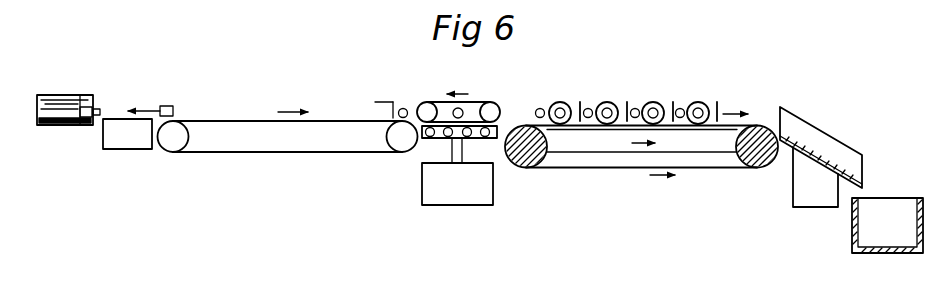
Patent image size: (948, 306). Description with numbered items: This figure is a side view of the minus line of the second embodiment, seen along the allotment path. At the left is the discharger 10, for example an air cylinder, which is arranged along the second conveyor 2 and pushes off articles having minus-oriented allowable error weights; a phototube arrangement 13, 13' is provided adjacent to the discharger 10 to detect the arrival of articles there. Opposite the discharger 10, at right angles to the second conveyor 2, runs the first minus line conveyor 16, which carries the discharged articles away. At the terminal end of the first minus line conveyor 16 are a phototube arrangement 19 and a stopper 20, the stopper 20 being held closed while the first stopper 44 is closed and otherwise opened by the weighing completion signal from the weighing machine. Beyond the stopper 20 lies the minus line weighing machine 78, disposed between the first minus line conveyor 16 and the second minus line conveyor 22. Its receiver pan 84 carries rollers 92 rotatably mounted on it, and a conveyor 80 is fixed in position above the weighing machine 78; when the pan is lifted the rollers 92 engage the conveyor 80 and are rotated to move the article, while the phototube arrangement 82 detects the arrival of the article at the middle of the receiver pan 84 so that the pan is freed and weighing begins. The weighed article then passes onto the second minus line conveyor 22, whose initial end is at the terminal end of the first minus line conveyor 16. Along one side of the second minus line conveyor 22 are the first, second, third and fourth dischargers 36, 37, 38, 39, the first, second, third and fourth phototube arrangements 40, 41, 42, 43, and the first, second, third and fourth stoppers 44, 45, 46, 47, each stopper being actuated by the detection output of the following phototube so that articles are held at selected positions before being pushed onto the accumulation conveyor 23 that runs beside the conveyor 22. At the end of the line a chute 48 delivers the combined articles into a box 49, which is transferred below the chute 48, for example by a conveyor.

The discharger 10 is at (69, 96).
The phototube arrangement 13 is at (81, 130).
The phototube arrangement 13' is at (158, 94).
The second conveyor 2 is at (133, 150).
The first minus line conveyor 16 is at (238, 119).
The phototube arrangement 19 is at (405, 108).
The stopper 20 is at (372, 99).
The conveyor 80 is at (459, 102).
The phototube arrangement 82 is at (459, 108).
The receiver pan 84 is at (425, 141).
The rollers 92 is at (460, 145).
The minus line weighing machine 78 is at (494, 193).
The second minus line conveyor 22 is at (523, 124).
The accumulation conveyor 23 is at (743, 169).
The first discharger 36 is at (570, 125).
The second discharger 37 is at (616, 125).
The third discharger 38 is at (655, 125).
The fourth discharger 39 is at (701, 125).
The first phototube arrangement 40 is at (542, 107).
The second phototube arrangement 41 is at (592, 108).
The third phototube arrangement 42 is at (638, 109).
The fourth phototube arrangement 43 is at (684, 109).
The first stopper 44 is at (587, 102).
The second stopper 45 is at (624, 102).
The third stopper 46 is at (681, 102).
The fourth stopper 47 is at (736, 100).
The chute 48 is at (819, 131).
The box 49 is at (897, 198).